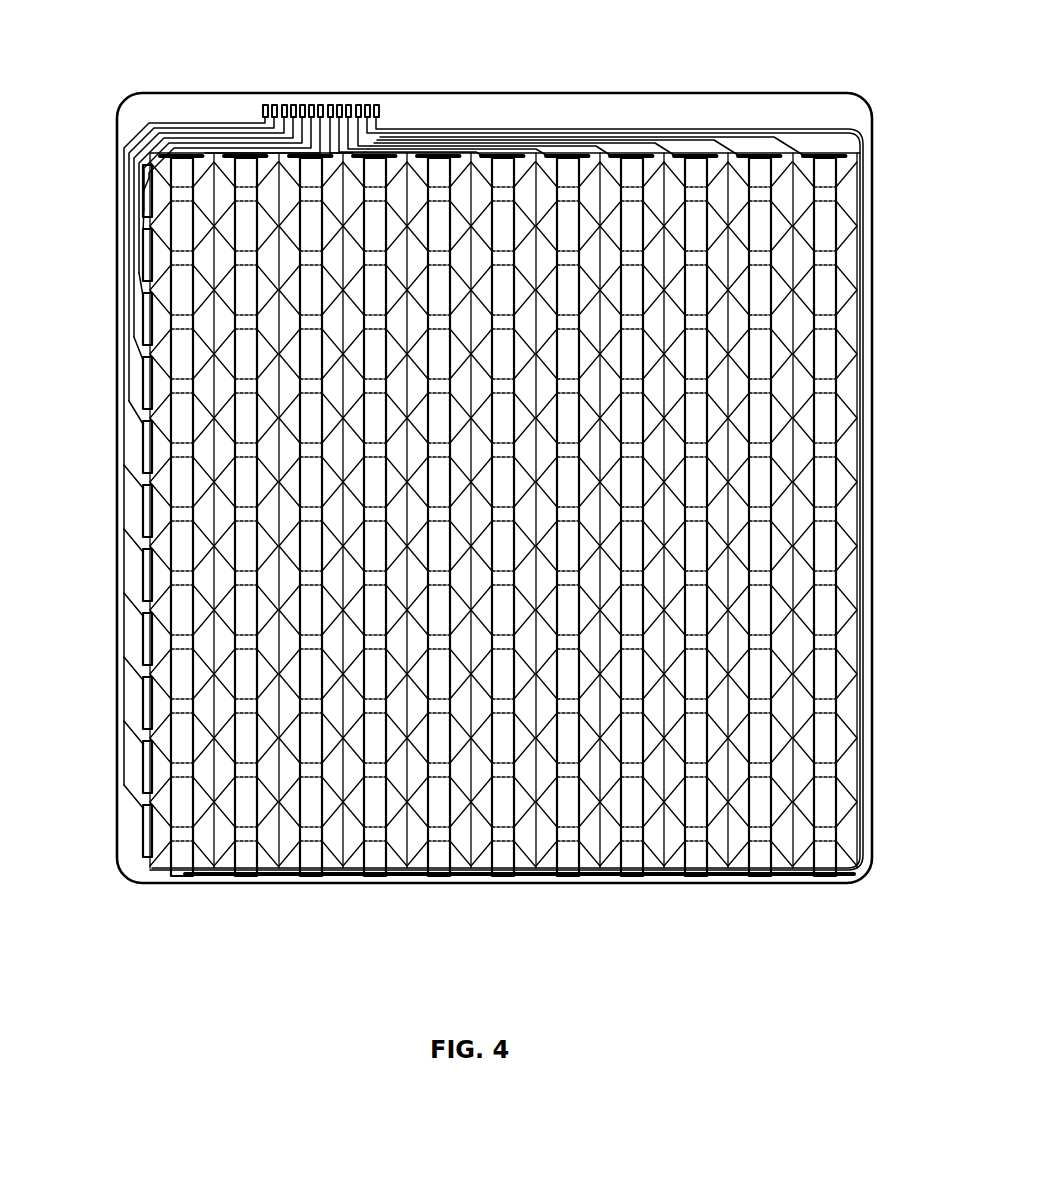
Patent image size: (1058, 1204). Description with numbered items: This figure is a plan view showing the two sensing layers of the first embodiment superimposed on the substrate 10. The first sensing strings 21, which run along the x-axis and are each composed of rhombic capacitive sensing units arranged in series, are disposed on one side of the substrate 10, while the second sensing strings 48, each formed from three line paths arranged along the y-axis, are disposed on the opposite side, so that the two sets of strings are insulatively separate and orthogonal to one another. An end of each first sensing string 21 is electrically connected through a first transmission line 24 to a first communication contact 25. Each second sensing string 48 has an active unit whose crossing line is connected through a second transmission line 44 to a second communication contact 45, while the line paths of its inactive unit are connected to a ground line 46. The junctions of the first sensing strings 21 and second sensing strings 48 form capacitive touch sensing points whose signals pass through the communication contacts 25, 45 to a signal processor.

The substrate 10 is at (493, 93).
The first sensing string 21 is at (852, 190).
The first transmission line 24 is at (128, 670).
The first communication contact 25 is at (263, 106).
The second transmission line 44 is at (648, 130).
The second communication contact 45 is at (380, 105).
The ground line 46 is at (220, 876).
The second sensing string 48 is at (755, 148).